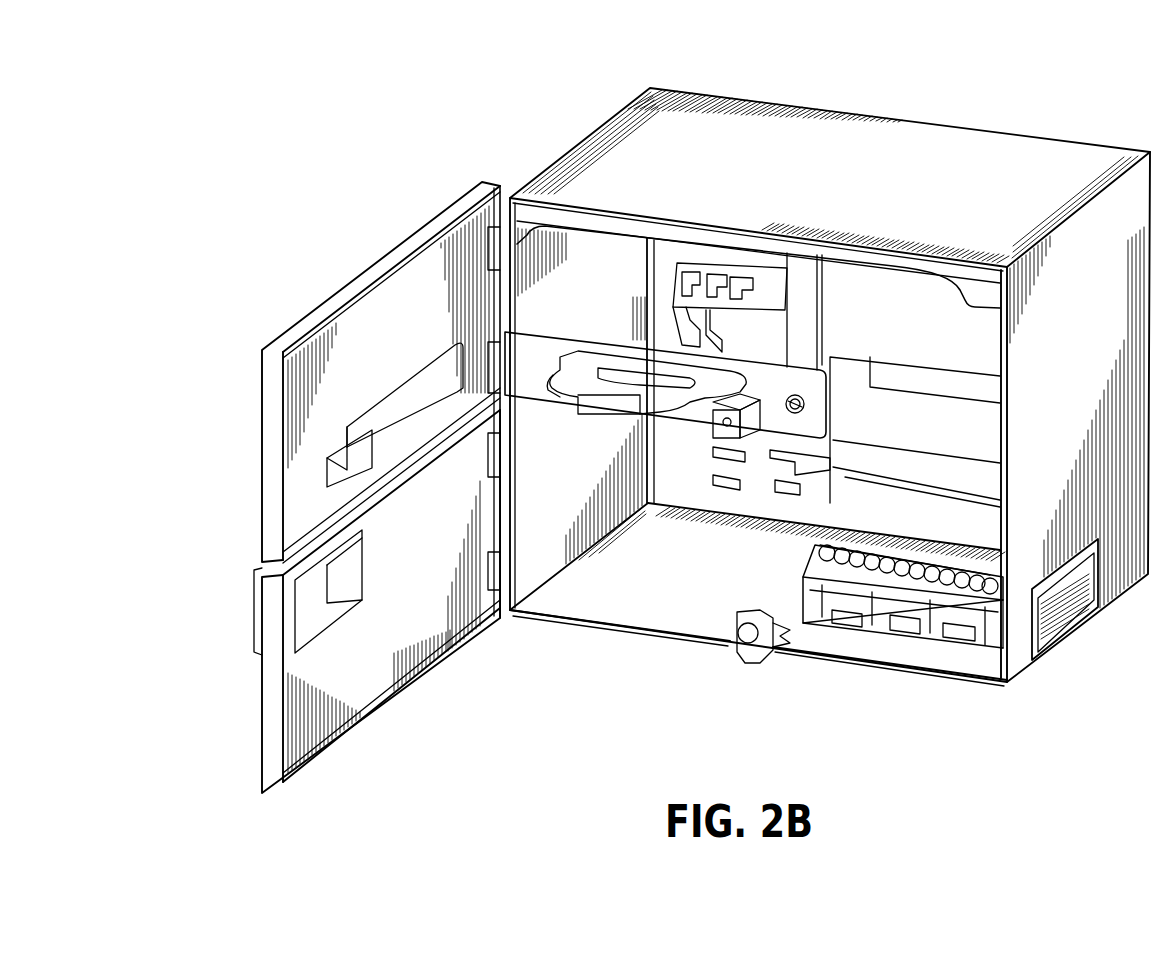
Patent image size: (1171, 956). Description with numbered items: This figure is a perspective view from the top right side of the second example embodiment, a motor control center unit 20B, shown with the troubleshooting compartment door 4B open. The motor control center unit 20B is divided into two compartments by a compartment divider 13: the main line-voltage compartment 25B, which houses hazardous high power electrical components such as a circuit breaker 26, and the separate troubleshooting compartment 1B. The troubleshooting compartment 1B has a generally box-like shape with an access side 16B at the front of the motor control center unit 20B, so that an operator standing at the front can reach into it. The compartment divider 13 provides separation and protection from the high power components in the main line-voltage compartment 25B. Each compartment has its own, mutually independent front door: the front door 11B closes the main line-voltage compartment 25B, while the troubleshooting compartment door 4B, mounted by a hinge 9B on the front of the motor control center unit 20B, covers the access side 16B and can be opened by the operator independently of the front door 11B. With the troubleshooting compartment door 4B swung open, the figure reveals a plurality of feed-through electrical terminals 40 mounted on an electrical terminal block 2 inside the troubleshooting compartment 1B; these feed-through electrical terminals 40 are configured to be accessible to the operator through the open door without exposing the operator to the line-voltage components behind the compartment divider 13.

The motor control center unit 20B is at (548, 100).
The main line-voltage compartment 25B is at (600, 265).
The circuit breaker 26 is at (778, 252).
The compartment divider 13 is at (965, 432).
The troubleshooting compartment 1B is at (664, 610).
The access side 16B is at (685, 655).
The electrical terminal block 2 is at (895, 640).
The feed-through electrical terminals 40 is at (900, 600).
The hinge 9B is at (512, 620).
The front door 11B is at (295, 308).
The troubleshooting compartment door 4B is at (390, 660).